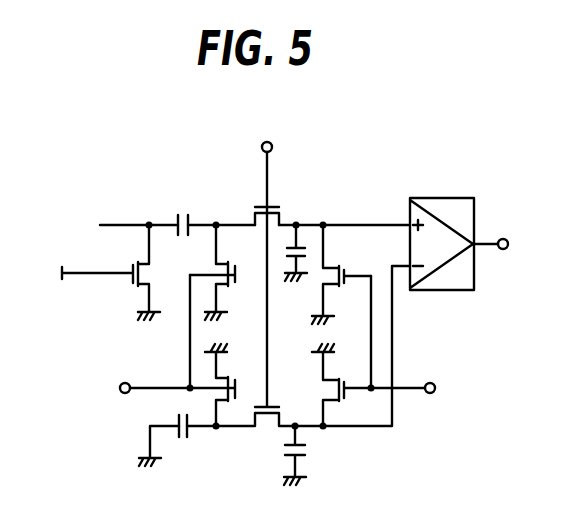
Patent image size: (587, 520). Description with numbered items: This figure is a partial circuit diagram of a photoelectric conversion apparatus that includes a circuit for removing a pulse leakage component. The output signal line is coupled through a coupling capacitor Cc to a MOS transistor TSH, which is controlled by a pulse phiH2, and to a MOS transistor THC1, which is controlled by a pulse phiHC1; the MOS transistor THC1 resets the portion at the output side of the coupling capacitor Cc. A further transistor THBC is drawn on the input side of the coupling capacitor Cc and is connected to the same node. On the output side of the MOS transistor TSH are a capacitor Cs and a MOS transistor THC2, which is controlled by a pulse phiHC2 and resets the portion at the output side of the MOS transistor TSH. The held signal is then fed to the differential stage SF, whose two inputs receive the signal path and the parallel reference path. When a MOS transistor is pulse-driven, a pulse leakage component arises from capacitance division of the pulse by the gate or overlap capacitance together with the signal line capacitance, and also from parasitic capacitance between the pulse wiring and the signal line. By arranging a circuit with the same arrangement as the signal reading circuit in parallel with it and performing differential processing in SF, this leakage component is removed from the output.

The bias transistor THBC is at (111, 272).
The coupling capacitor Cc is at (187, 209).
The MOS transistor THC1 is at (228, 272).
The pulse phiH2 is at (271, 161).
The MOS transistor TSH is at (284, 201).
The MOS transistor THC2 is at (347, 274).
The capacitor Cs is at (307, 250).
The source follower amplifier SF is at (455, 198).
The pulse phiHC1 is at (132, 390).
The pulse phiHC2 is at (432, 390).